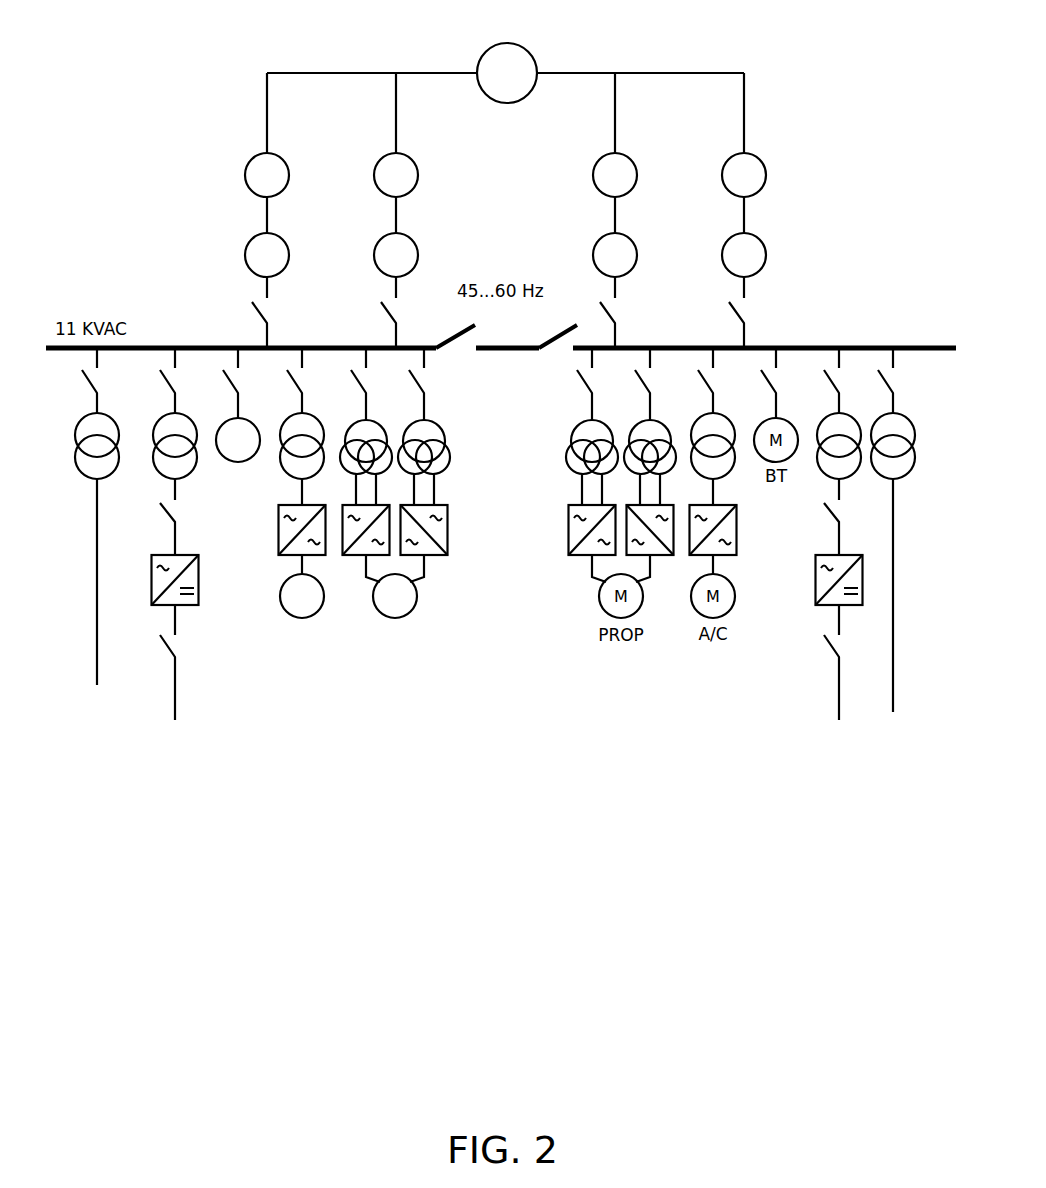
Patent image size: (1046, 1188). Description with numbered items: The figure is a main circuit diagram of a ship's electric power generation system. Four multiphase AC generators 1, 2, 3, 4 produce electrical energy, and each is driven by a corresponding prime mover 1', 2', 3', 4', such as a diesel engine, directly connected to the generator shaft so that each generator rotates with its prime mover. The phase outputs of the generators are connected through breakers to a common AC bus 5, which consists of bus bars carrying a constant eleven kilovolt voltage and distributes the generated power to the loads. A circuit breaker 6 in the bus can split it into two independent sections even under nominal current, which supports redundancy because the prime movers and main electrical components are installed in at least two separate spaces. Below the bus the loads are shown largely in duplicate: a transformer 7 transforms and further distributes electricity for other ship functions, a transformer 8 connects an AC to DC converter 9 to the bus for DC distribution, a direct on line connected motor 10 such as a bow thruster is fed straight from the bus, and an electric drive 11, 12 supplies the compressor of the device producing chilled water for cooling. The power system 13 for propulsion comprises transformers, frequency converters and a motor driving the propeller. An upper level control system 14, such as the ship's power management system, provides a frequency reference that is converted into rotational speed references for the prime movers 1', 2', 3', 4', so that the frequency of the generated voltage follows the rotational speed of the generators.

The generator 1 is at (262, 271).
The prime mover 1' is at (262, 156).
The generator 2 is at (391, 271).
The prime mover 2' is at (391, 156).
The generator 3 is at (617, 271).
The prime mover 3' is at (621, 154).
The generator 4 is at (746, 271).
The prime mover 4' is at (750, 154).
The AC bus 5 is at (872, 344).
The circuit breaker 6 is at (510, 360).
The transformer 7 is at (77, 466).
The transformer 8 is at (156, 466).
The AC to DC converter 9 is at (199, 593).
The direct on line connected motor 10 is at (218, 458).
The electric drive 11 is at (277, 540).
The electric drive 12 is at (281, 601).
The power system for the propulsion 13 is at (452, 566).
The upper level control system 14 is at (482, 53).